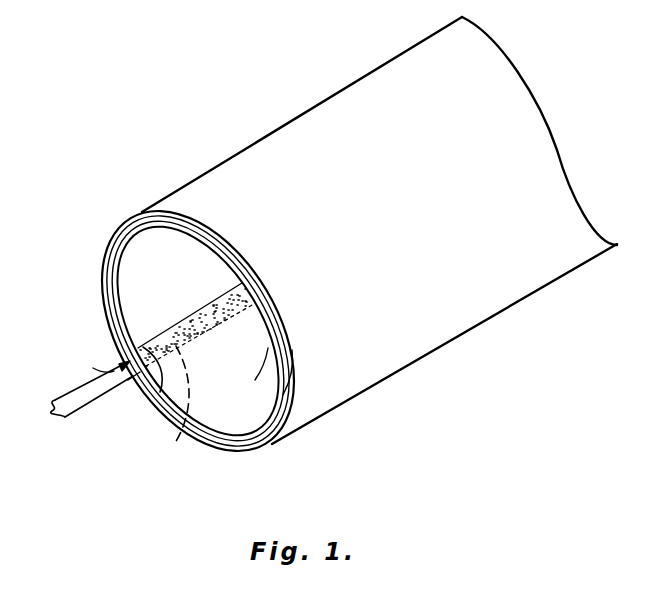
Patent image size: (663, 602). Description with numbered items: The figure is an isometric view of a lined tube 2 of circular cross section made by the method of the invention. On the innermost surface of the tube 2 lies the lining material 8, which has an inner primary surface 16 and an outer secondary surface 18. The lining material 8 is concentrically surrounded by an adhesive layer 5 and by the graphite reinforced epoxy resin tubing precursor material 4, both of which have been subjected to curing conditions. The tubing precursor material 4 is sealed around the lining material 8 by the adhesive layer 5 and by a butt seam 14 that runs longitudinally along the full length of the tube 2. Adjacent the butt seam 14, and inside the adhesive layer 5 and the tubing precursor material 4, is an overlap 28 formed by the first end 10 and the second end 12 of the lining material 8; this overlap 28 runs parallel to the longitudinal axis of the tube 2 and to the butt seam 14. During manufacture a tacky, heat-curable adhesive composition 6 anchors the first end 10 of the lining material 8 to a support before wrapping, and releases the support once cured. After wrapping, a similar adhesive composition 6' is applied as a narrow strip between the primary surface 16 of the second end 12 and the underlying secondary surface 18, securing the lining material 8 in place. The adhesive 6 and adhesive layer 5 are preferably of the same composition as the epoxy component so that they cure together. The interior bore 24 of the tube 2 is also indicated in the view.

The tube 2 is at (212, 130).
The tubing precursor material 4 is at (224, 455).
The adhesive layer 5 is at (237, 450).
The adhesive composition 6 is at (150, 408).
The adhesive composition 6' is at (88, 357).
The lining material 8 is at (263, 441).
The first end of the lining material 10 is at (160, 336).
The second end of the lining material 12 is at (190, 409).
The butt seam 14 is at (134, 380).
The inner primary surface 16 is at (138, 247).
The outer secondary surface 18 is at (287, 383).
The bore 24 is at (263, 360).
The overlap 28 is at (76, 403).